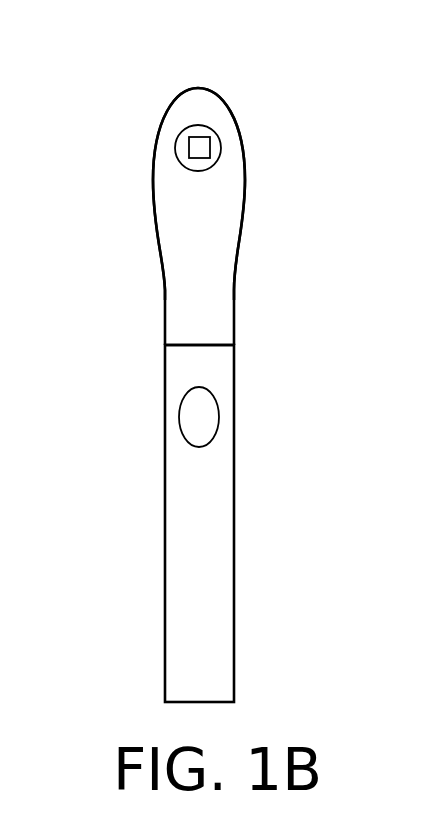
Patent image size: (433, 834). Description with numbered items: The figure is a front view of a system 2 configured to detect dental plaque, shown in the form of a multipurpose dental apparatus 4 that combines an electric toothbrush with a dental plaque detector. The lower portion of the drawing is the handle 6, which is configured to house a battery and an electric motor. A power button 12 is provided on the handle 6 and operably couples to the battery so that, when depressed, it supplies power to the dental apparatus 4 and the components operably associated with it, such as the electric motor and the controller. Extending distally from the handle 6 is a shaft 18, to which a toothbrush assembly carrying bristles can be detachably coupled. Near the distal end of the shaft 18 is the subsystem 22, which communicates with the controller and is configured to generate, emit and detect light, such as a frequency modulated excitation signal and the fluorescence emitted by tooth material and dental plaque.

The system 2 is at (119, 80).
The multipurpose dental apparatus 4 is at (210, 344).
The handle 6 is at (237, 548).
The power button 12 is at (208, 415).
The shaft 18 is at (236, 257).
The subsystem 22 is at (199, 148).